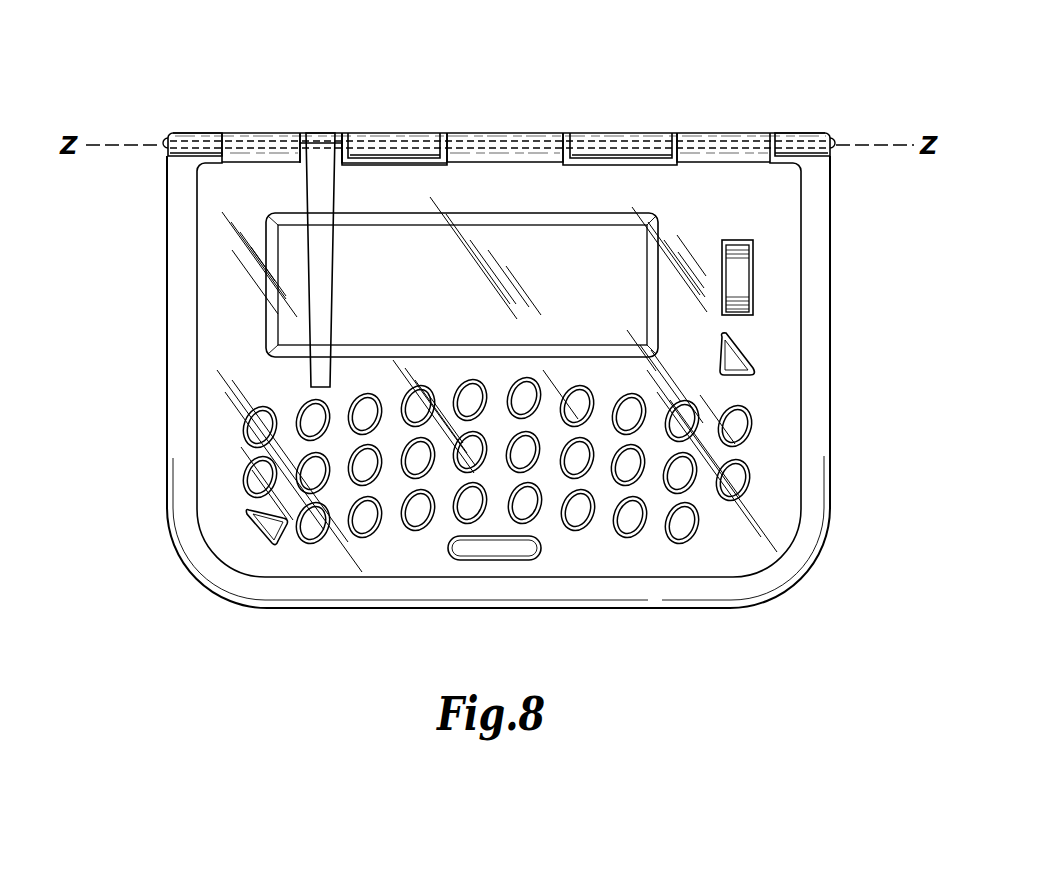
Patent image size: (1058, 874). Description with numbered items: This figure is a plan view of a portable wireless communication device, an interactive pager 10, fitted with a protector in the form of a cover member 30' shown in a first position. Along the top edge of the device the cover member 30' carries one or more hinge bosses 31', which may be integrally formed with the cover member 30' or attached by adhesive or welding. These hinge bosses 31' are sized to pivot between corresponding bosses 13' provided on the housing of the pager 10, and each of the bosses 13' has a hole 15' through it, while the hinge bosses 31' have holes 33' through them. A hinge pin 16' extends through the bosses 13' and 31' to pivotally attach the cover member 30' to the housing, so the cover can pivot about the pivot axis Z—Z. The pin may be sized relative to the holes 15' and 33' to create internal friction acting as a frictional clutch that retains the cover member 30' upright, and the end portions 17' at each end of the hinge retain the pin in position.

The interactive pager 10 is at (845, 327).
The cover member 30' is at (550, 370).
The bosses 13' is at (502, 102).
The hole 15' is at (502, 126).
The hinge pin 16' is at (330, 213).
The end cap 17' is at (502, 120).
The hinge bosses 31' is at (505, 101).
The holes 33' is at (482, 94).